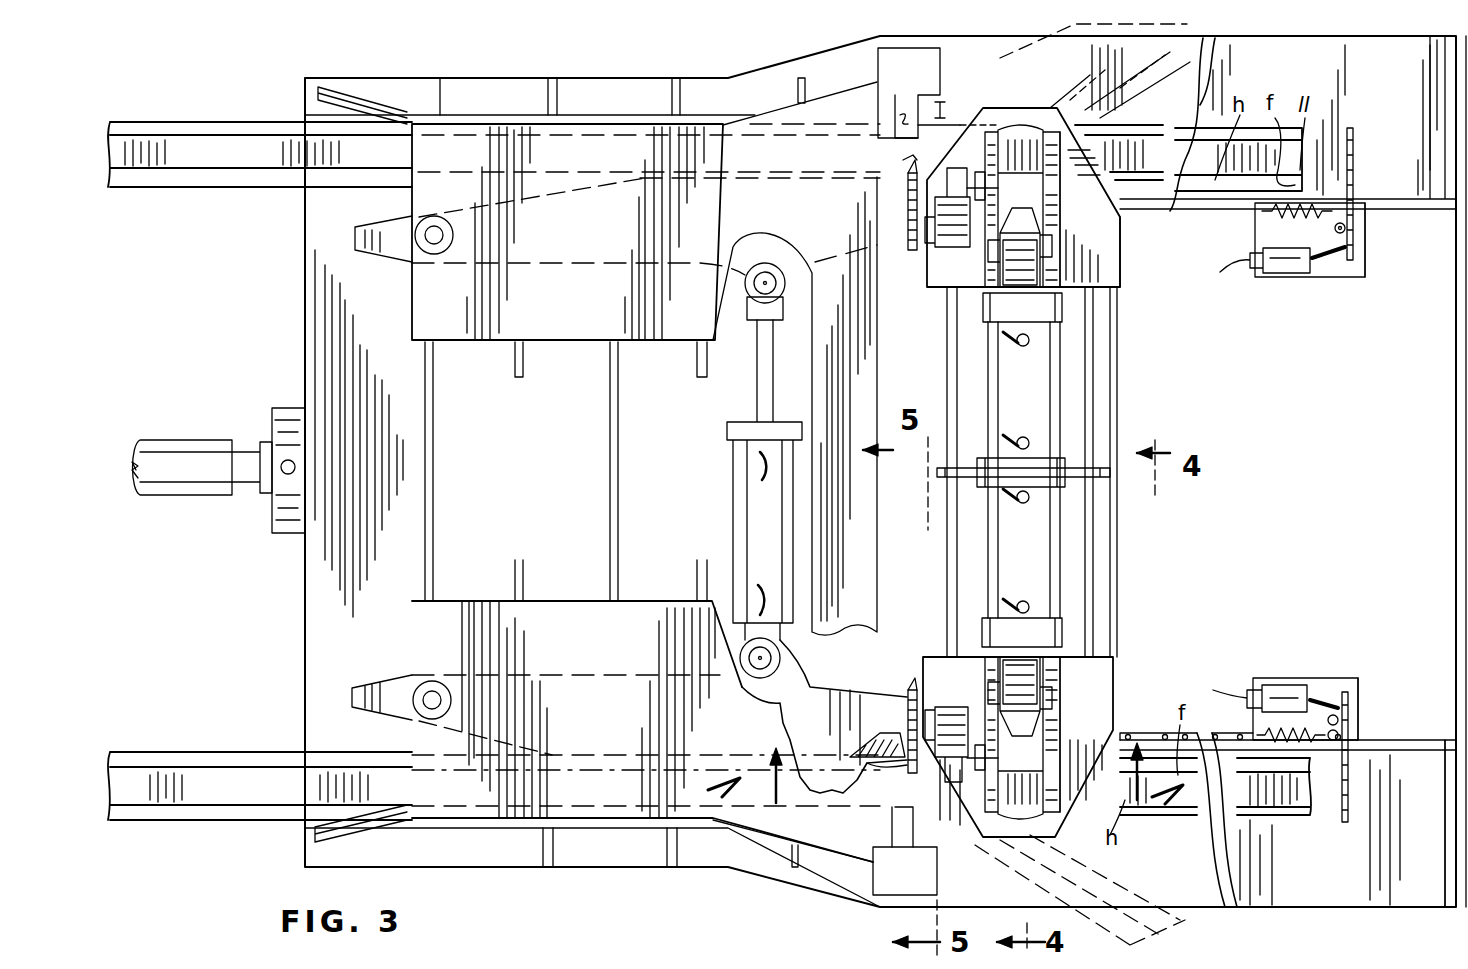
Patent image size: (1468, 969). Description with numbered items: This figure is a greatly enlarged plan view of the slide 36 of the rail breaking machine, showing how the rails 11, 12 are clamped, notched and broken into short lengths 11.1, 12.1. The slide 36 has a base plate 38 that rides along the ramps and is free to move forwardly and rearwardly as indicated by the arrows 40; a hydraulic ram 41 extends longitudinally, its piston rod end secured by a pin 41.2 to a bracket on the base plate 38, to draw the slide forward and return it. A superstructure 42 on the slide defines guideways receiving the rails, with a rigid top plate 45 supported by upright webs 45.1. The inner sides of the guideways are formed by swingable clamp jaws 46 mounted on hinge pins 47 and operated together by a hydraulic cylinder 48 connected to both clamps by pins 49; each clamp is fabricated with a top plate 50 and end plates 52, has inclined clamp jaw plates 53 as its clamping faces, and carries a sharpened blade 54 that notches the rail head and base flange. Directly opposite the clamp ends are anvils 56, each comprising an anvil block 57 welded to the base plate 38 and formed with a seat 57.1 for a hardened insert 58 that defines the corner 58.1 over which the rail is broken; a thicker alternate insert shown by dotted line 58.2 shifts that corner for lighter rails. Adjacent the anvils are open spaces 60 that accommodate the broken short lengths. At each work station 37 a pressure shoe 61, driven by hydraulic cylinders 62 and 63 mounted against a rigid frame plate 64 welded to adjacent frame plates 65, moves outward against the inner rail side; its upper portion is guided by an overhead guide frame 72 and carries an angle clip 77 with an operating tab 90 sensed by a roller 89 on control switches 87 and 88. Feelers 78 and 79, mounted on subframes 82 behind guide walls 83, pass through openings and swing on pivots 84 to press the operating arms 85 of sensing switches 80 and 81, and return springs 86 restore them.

The railroad track rail 11 is at (180, 130).
The short length of rail 11.1 is at (1170, 60).
The railroad track rail 12 is at (140, 765).
The short length of rail 12.1 is at (1115, 860).
The slide 36 is at (615, 866).
The work station 37 is at (1090, 115).
The base plate 38 is at (330, 318).
The arrows 40 is at (733, 897).
The hydraulic cylinder or ram 41 is at (170, 455).
The pin 41.2 is at (288, 475).
The superstructure 42 is at (635, 110).
The top plate 45 is at (865, 402).
The upright webs or frame plates 45.1 is at (520, 590).
The clamp jaws 46 is at (912, 232).
The hinge pins 47 is at (432, 255).
The hydraulic cylinder 48 is at (760, 500).
The pins 49 is at (758, 278).
The top plate of clamp 50 is at (795, 733).
The end plates 52 is at (885, 730).
The clamp jaw plates 53 is at (870, 800).
The blade 54 is at (908, 182).
The anvils or fulcrums 56 is at (900, 62).
The anvil blocks 57 is at (895, 75).
The mounting seats 57.1 is at (870, 120).
The hardened steel insert blocks 58 is at (940, 110).
The hardened corner 58.1 is at (915, 150).
The dotted line for alternate insert 58.2 is at (995, 100).
The open and unobstructed spaces 60 is at (1065, 40).
The rail breaking pressure shoe 61 is at (1040, 215).
The hydraulic cylinders 62 is at (1030, 380).
The hydraulic cylinders 63 is at (1035, 560).
The rigid frame plate 64 is at (1100, 468).
The upright frame plates 65 is at (1095, 555).
The overhead guide frame 72 is at (1138, 665).
The angle clip 77 is at (1040, 282).
The feeler 78 is at (1352, 170).
The feeler 79 is at (1345, 782).
The sensing switch 80 is at (1292, 278).
The sensing switch 81 is at (1290, 685).
The subframes 82 is at (1360, 275).
The upright guide walls 83 is at (1440, 210).
The openings / pivots 84 is at (1332, 790).
The operating arms 85 is at (1340, 280).
The return springs 86 is at (1285, 215).
The control switch 87 is at (955, 248).
The control switch 88 is at (950, 725).
The rollers 89 is at (998, 187).
The operating tabs 90 is at (985, 297).